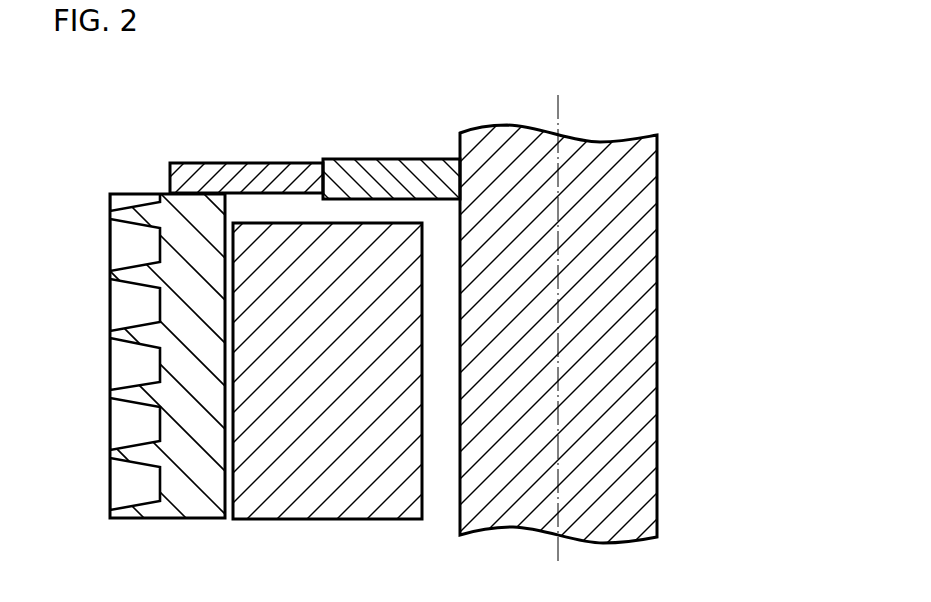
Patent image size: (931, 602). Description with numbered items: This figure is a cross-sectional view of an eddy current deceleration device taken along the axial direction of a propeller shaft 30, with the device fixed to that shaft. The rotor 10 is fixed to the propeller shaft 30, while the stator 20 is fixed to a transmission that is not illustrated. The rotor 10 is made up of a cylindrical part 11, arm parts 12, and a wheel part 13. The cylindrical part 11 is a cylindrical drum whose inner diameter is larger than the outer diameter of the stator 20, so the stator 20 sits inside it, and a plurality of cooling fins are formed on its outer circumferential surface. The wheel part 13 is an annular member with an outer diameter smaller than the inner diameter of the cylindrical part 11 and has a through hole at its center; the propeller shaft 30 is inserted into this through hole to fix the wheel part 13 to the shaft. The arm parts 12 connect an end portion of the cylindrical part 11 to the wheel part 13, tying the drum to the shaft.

The rotor 10 is at (127, 135).
The cylindrical part 11 is at (147, 194).
The arm parts 12 is at (282, 164).
The wheel part 13 is at (387, 159).
The stator 20 is at (381, 520).
The propeller shaft 30 is at (468, 131).